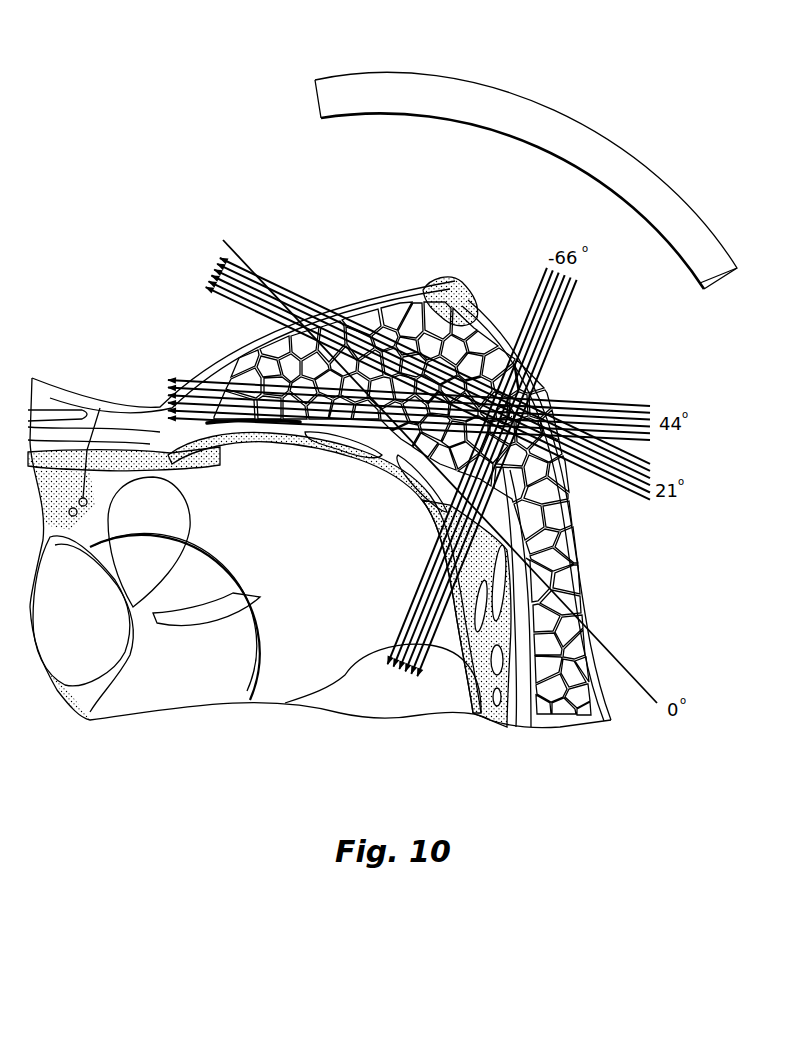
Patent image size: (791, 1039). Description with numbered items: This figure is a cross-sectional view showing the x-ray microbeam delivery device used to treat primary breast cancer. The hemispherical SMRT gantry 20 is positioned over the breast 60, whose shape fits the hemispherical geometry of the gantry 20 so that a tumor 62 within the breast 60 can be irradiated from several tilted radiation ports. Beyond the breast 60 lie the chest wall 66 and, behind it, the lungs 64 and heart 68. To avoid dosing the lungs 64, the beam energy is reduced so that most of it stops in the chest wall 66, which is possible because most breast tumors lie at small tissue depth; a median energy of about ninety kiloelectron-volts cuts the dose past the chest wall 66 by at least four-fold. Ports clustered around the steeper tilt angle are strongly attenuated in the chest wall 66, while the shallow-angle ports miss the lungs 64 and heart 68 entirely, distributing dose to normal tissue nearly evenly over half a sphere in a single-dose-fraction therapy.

The gantry 20 is at (498, 86).
The breast 60 is at (353, 290).
The tumor 62 is at (496, 386).
The lungs 64 is at (363, 696).
The chest wall 66 is at (521, 714).
The heart 68 is at (100, 408).